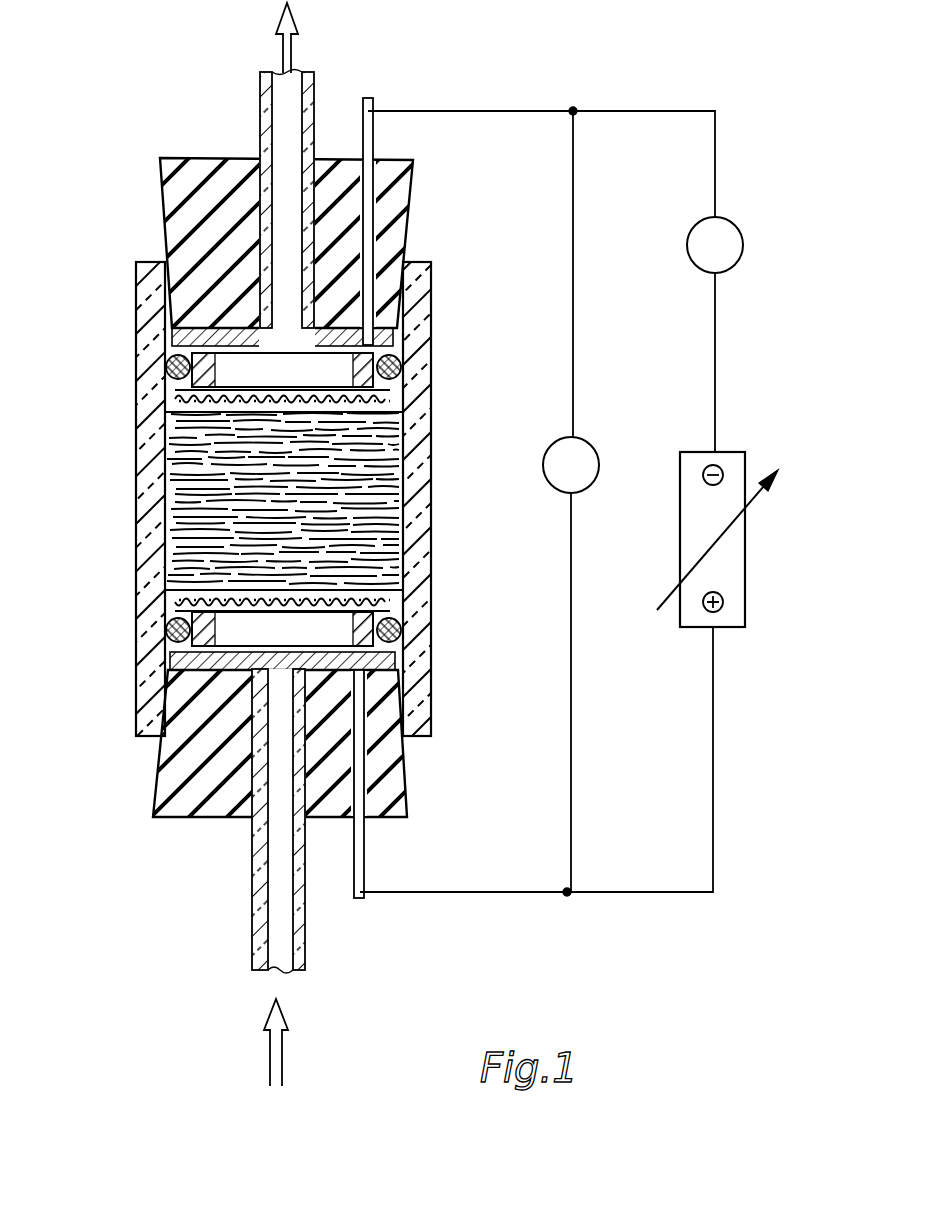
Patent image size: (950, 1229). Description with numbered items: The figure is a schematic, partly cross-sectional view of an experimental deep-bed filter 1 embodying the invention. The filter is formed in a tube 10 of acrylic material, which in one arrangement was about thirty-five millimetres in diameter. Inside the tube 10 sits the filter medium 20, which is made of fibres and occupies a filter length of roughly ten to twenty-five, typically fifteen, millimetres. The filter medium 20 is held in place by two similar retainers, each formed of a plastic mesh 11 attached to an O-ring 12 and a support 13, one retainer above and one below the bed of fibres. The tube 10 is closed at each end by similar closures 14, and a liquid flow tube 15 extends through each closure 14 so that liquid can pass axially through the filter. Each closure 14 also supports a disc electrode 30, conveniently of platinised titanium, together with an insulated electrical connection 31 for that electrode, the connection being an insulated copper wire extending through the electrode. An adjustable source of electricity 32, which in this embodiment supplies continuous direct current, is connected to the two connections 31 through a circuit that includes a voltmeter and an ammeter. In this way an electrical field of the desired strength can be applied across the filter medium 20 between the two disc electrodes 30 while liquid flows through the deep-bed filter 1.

The deep-bed filter 1 is at (470, 544).
The tube 10 is at (415, 517).
The plastic meshes 11 is at (198, 405).
The O-rings 12 is at (400, 358).
The supports 13 is at (383, 397).
The closures 14 is at (205, 173).
The liquid flow tube 15 is at (263, 90).
The filter medium 20 is at (187, 515).
The disc electrode 30 is at (190, 328).
The insulated electrical connection 31 is at (370, 133).
The adjustable source of electricity 32 is at (679, 529).